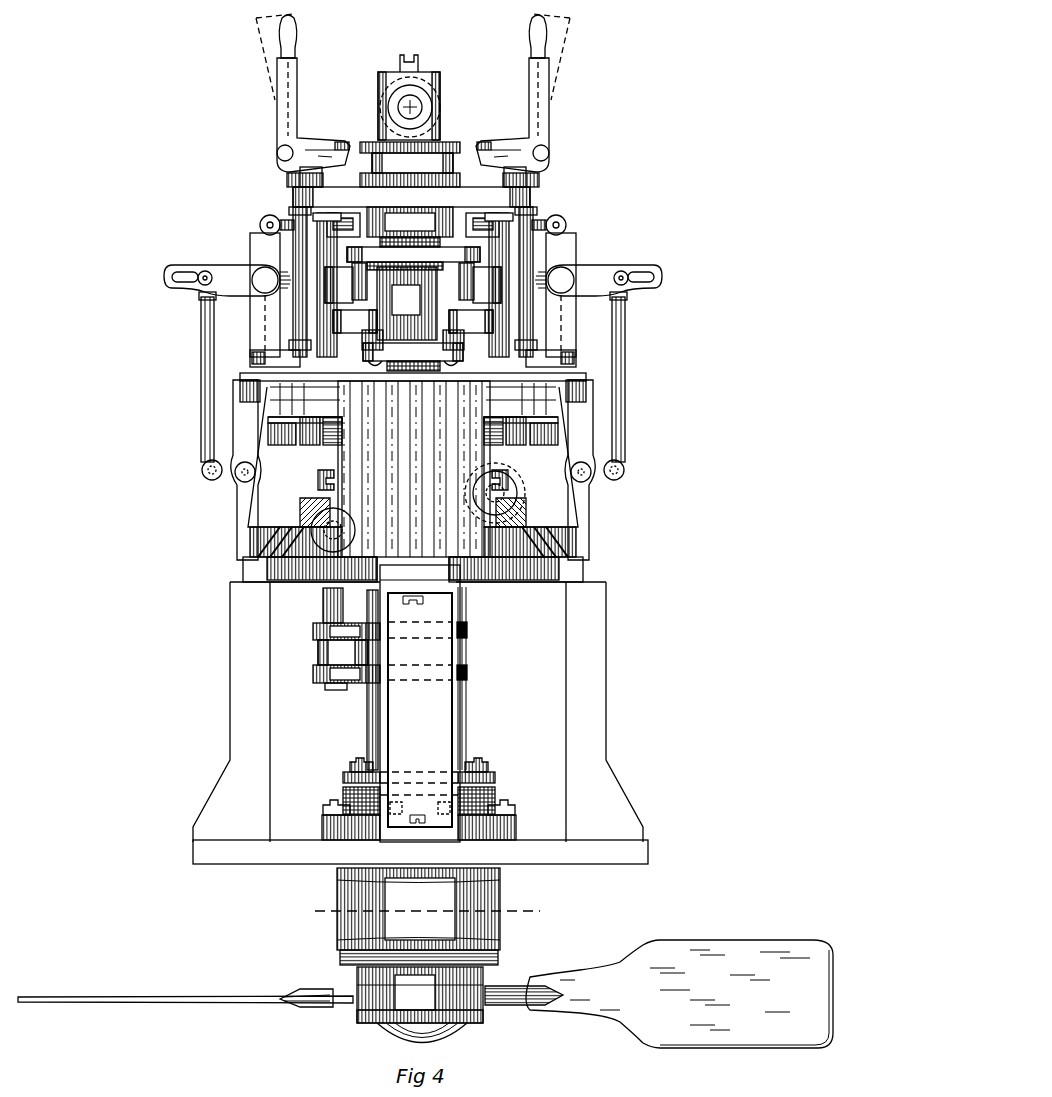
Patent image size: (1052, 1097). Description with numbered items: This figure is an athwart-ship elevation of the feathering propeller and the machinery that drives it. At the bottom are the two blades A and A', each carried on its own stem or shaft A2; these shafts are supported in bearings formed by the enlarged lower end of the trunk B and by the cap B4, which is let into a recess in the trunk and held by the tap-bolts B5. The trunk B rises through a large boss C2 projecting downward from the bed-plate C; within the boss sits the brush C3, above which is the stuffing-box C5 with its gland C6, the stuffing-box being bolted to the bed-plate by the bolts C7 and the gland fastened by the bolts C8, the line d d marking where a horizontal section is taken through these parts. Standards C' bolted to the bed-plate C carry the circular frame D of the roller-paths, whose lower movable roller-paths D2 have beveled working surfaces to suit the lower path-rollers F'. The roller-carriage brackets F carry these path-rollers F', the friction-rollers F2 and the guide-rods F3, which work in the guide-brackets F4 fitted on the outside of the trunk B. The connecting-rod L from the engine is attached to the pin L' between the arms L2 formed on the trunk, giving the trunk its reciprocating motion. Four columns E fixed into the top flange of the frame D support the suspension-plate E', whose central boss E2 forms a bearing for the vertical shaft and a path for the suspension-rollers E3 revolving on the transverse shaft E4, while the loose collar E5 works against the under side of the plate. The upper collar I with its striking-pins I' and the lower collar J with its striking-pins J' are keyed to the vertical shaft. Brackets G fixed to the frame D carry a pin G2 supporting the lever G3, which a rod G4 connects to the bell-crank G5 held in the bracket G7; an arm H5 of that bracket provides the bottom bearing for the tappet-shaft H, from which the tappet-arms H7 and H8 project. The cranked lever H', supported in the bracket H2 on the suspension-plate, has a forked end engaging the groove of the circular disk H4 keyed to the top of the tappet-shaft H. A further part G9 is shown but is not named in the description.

The cranked lever H' is at (413, 93).
The bracket H2 is at (413, 166).
The circular disk H4 is at (345, 142).
The suspension-rollers E3 is at (409, 97).
The transverse shaft E4 is at (410, 107).
The central boss E2 is at (410, 164).
The suspension-plate E' is at (411, 197).
The lever G3 is at (283, 219).
The columns E is at (413, 282).
The bracket G7 is at (413, 300).
The bell-crank G5 is at (413, 273).
The rod G4 is at (419, 377).
The brackets G is at (413, 470).
The pin G2 is at (413, 468).
The loose collar E5 is at (410, 227).
The cam block G9 is at (413, 225).
The tappet-shaft H is at (413, 285).
The upper collar I is at (413, 258).
The striking-pins I' is at (413, 281).
The tappet-arm H7 is at (413, 285).
The trunk B is at (420, 645).
The tappet-arm H8 is at (413, 321).
The striking-pins J' is at (414, 340).
The lower collar J is at (413, 357).
The arm H5 is at (345, 355).
The circular frame D is at (413, 465).
The roller-carriage brackets F is at (413, 472).
The path-rollers F' is at (414, 447).
The guide-rods F3 is at (418, 441).
The friction-rollers F2 is at (418, 507).
The lower movable roller-paths D2 is at (278, 583).
The guide-brackets F4 is at (413, 678).
The arms L2 is at (346, 653).
The connecting-rod L is at (343, 652).
The pin L' is at (335, 646).
The standards C' is at (418, 703).
The bed-plate C is at (420, 852).
The bolts C8 is at (357, 758).
The gland C6 is at (342, 779).
The stuffing-box C5 is at (504, 794).
The bolts C7 is at (323, 808).
The brush C3 is at (345, 840).
The boss C2 is at (418, 916).
The section line d is at (426, 912).
The cap B4 is at (422, 1026).
The tap-bolts B5 is at (370, 1022).
The blade A is at (185, 994).
The stem or shaft A2 is at (421, 989).
The blade A' is at (679, 994).